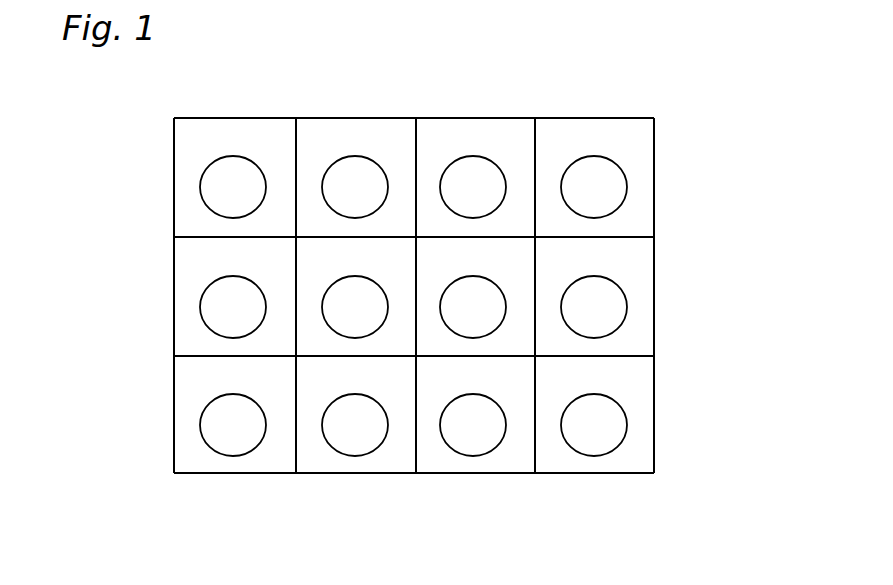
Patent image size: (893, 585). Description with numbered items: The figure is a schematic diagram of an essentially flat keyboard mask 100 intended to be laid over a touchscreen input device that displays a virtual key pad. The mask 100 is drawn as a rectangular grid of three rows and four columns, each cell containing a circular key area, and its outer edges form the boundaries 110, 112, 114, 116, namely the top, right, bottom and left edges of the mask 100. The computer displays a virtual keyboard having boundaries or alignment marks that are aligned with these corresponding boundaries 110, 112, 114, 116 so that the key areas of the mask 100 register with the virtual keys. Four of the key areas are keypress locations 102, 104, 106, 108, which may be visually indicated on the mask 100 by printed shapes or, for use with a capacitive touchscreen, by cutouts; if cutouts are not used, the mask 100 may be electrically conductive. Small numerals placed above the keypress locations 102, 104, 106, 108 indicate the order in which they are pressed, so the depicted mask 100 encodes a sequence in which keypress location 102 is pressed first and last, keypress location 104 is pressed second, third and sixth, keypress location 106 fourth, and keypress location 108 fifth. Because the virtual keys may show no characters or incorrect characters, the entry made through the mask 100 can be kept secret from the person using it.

The keyboard mask 100 is at (735, 97).
The keypress location 102 is at (339, 196).
The keypress location 104 is at (457, 316).
The keypress location 106 is at (578, 196).
The keypress location 108 is at (339, 434).
The boundary 110 is at (338, 118).
The boundary 112 is at (654, 198).
The boundary 114 is at (393, 473).
The boundary 116 is at (173, 203).